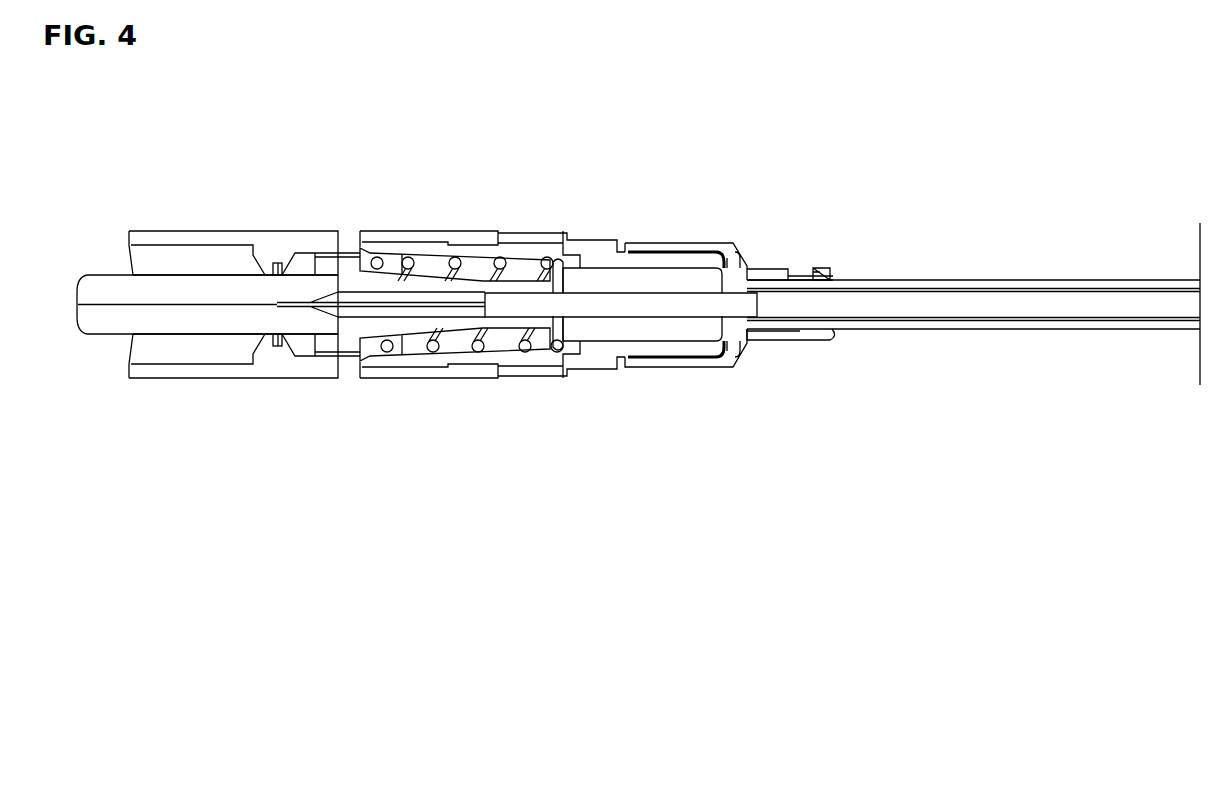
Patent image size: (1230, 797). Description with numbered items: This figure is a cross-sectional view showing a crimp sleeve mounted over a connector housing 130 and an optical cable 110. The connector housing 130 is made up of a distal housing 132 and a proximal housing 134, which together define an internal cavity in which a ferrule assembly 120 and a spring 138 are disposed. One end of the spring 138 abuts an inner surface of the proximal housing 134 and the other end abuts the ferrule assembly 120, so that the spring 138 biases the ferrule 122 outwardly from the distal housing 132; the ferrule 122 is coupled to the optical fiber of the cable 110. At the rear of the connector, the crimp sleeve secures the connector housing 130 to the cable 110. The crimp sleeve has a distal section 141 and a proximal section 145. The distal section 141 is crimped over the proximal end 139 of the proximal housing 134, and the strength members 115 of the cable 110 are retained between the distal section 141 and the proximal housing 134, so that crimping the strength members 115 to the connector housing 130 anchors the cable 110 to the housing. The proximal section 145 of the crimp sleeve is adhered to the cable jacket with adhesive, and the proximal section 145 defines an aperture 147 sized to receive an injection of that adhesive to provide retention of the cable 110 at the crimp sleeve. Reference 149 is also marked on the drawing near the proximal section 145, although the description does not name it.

The optical cable 110 is at (977, 340).
The strength members 115 is at (707, 360).
The ferrule assembly 120 is at (283, 362).
The ferrule 122 is at (88, 336).
The connector housing 130 is at (492, 300).
The distal housing 132 is at (192, 232).
The proximal housing 134 is at (530, 377).
The spring 138 is at (433, 352).
The proximal end 139 is at (675, 255).
The distal section 141 is at (700, 245).
The proximal section 145 is at (795, 340).
The aperture 147 is at (812, 270).
The upper plate 149 is at (835, 272).